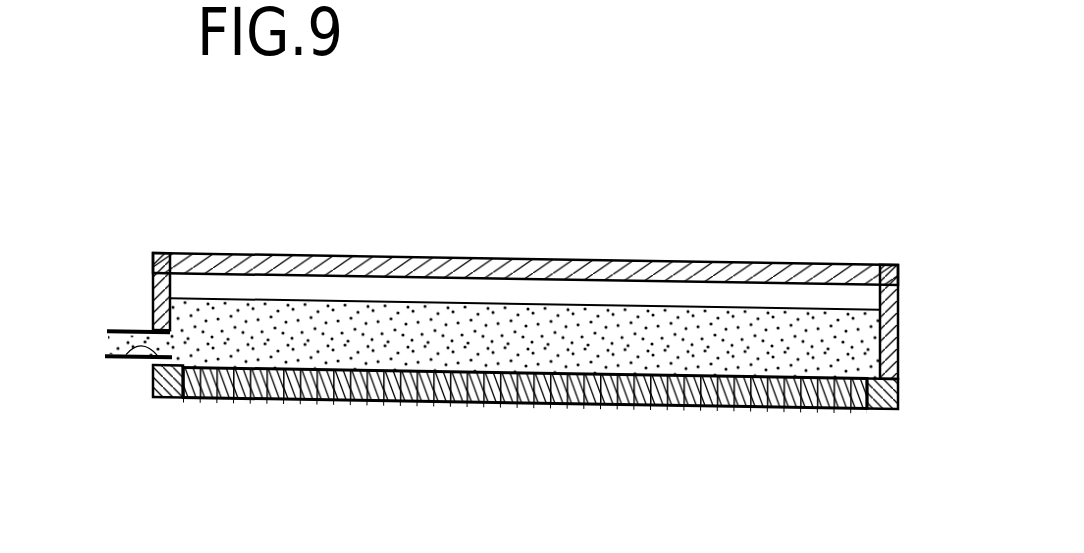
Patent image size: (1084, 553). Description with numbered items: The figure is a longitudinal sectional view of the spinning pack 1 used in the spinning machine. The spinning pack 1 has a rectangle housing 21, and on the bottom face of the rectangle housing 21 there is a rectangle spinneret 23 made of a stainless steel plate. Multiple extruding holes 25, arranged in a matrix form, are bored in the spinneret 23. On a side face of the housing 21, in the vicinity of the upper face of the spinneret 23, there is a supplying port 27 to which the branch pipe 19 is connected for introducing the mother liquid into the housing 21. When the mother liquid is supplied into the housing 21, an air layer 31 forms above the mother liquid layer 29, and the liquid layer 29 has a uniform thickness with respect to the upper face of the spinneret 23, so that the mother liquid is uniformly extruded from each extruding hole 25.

The spinning pack 1 is at (583, 203).
The branch pipe 19 is at (95, 270).
The rectangle housing 21 is at (753, 197).
The rectangle spinneret 23 is at (877, 398).
The extruding holes 25 is at (350, 400).
The supplying port 27 is at (122, 358).
The mother liquid layer 29 is at (472, 449).
The air layer 31 is at (289, 189).